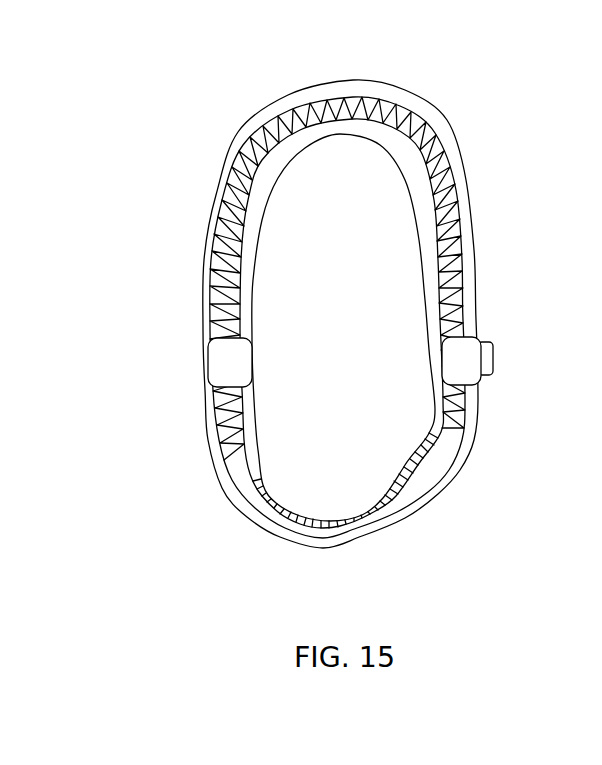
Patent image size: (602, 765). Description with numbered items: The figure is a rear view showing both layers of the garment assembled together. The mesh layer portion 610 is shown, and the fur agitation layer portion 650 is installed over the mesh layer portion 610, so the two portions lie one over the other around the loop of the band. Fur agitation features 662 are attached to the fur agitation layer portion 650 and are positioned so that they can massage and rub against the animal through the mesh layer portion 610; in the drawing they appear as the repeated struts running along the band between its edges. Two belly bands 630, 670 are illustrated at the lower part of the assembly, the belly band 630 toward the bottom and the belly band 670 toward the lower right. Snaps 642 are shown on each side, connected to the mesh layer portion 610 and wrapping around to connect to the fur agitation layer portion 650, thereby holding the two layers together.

The mesh layer portion 610 is at (412, 157).
The belly band 630 is at (318, 528).
The snaps 642 is at (493, 357).
The fur agitation layer portion 650 is at (238, 131).
The fur agitation features 662 is at (220, 288).
The belly band 670 is at (408, 517).